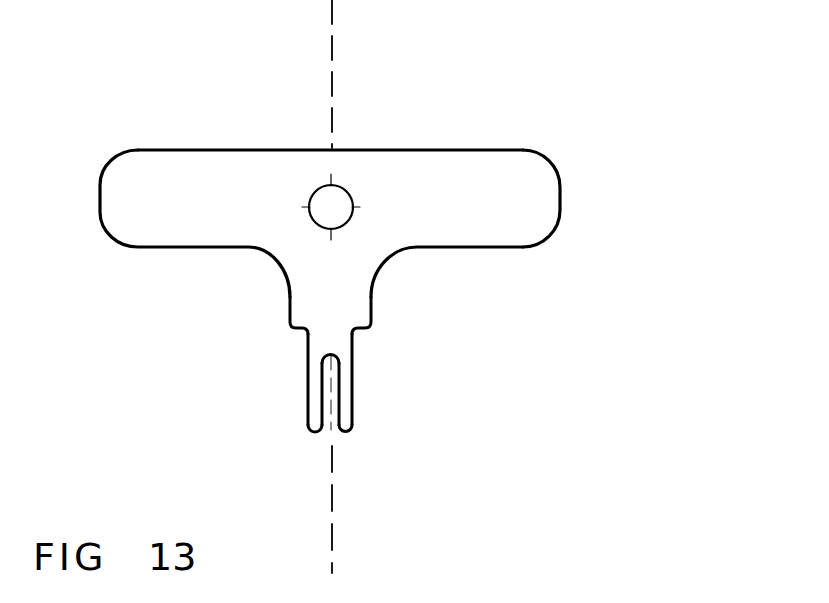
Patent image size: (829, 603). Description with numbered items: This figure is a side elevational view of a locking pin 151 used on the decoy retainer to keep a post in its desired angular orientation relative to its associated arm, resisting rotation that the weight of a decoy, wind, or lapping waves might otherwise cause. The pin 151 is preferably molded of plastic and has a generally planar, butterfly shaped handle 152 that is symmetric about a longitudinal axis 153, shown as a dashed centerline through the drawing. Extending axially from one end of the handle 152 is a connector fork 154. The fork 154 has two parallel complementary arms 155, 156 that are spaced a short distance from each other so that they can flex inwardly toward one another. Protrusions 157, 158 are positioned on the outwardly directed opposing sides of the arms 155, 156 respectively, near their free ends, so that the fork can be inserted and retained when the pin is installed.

The locking pin 151 is at (408, 153).
The handle 152 is at (619, 198).
The longitudinal axis 153 is at (337, 522).
The connector fork 154 is at (353, 348).
The arm 155 is at (303, 377).
The arm 156 is at (355, 375).
The protrusion 157 is at (302, 405).
The protrusion 158 is at (357, 403).